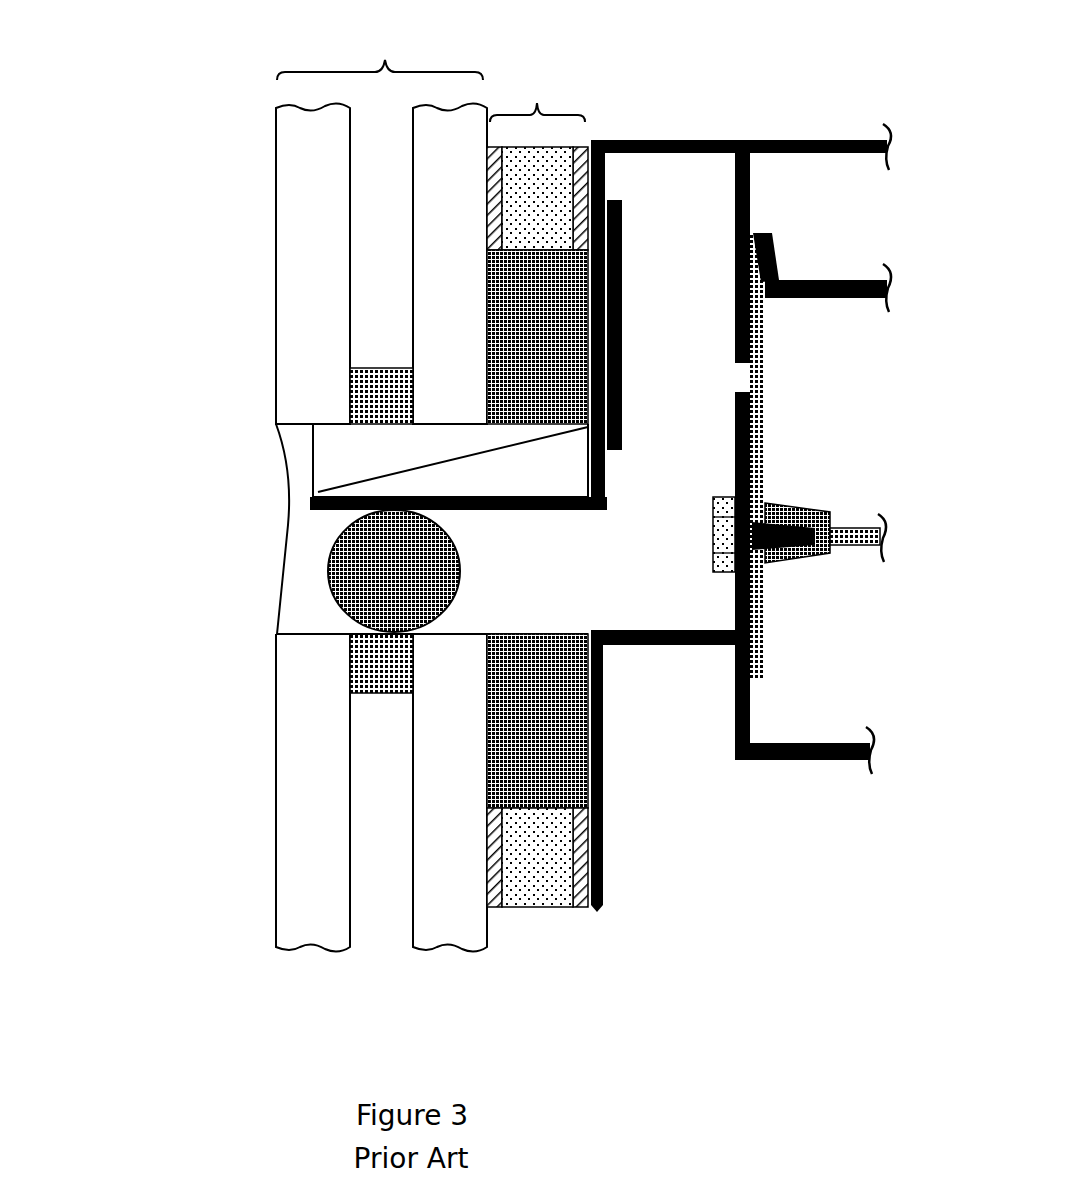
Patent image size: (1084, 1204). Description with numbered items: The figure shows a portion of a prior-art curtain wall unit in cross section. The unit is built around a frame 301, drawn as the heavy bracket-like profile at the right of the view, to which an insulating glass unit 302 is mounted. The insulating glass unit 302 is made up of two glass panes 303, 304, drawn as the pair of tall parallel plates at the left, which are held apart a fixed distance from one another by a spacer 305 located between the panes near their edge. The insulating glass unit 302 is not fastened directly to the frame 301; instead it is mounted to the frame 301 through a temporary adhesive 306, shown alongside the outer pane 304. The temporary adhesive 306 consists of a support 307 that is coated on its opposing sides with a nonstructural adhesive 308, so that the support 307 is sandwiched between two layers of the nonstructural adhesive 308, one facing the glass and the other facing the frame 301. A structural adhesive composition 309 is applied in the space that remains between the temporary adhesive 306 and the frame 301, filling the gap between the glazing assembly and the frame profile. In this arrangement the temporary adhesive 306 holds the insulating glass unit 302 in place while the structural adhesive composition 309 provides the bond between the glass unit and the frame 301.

The frame 301 is at (814, 776).
The insulating glass unit 302 is at (380, 50).
The glass pane 303 is at (313, 527).
The glass pane 304 is at (450, 527).
The spacer 305 is at (354, 403).
The temporary adhesive 306 is at (537, 242).
The support 307 is at (537, 918).
The nonstructural adhesive 308 is at (600, 922).
The structural adhesive composition 309 is at (566, 770).